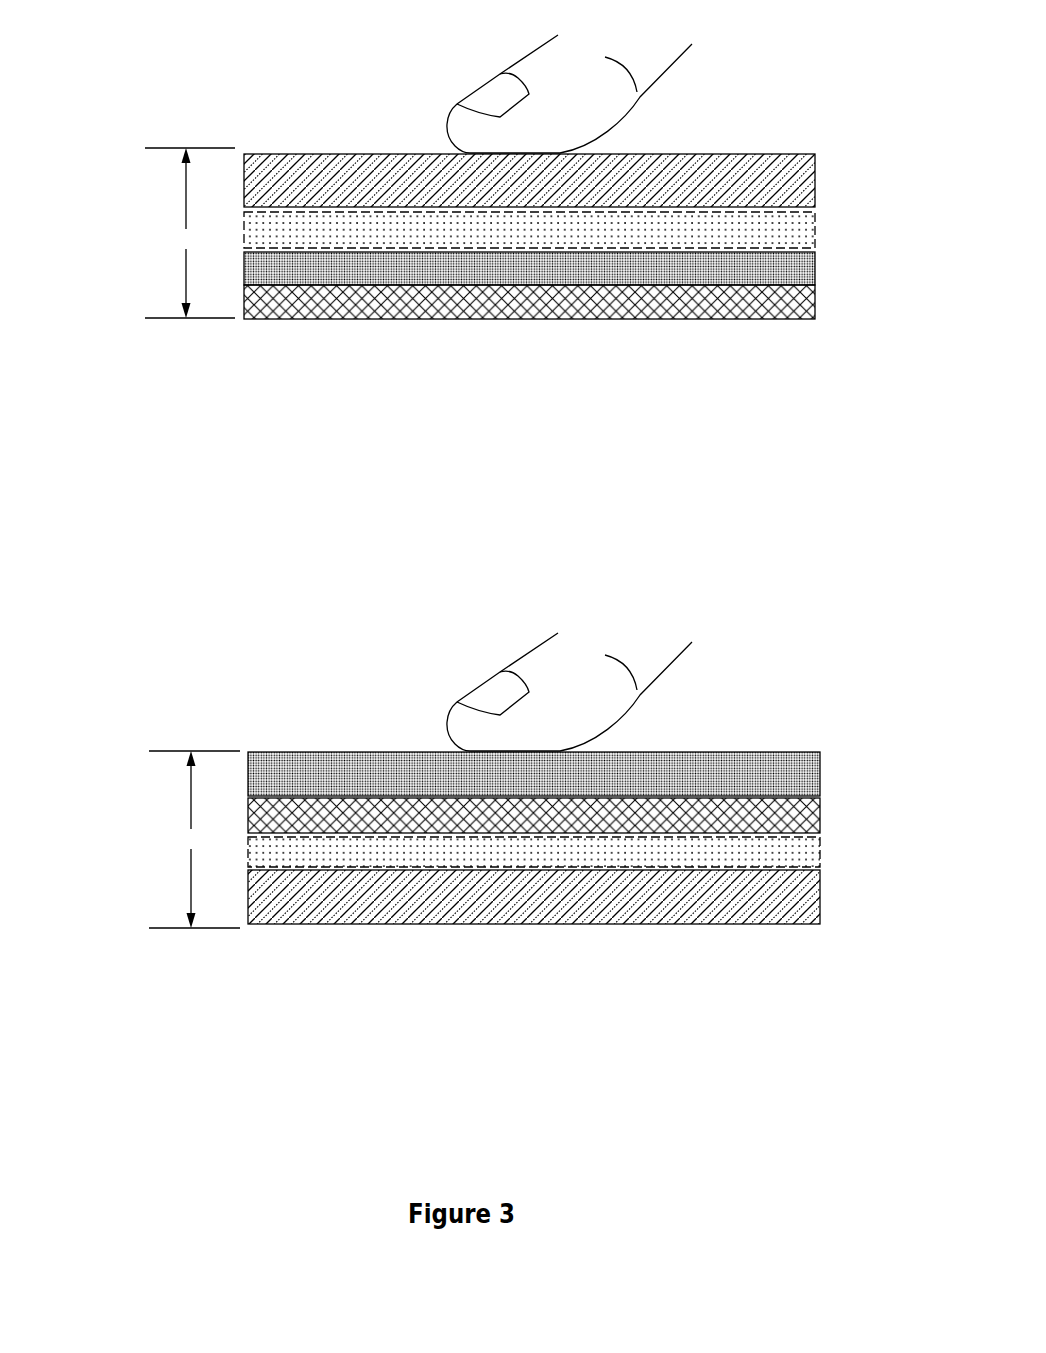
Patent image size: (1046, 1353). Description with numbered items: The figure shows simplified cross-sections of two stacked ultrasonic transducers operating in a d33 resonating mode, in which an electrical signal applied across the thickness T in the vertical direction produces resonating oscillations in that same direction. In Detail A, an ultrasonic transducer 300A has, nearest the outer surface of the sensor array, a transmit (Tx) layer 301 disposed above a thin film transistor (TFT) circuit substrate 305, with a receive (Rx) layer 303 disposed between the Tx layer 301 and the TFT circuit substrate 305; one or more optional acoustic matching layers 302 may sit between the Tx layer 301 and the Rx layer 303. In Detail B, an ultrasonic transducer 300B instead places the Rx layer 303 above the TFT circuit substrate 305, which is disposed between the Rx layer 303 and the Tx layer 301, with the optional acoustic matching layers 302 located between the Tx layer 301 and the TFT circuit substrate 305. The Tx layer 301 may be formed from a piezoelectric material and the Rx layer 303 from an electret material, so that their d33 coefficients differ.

The ultrasonic transducer 300A is at (232, 66).
The ultrasonic transducer 300B is at (232, 656).
The transmit (Tx) layer 301 is at (817, 167).
The acoustic matching layer 302 is at (817, 210).
The receive (Rx) layer 303 is at (817, 240).
The thin film transistor (TFT) circuit substrate 305 is at (817, 300).